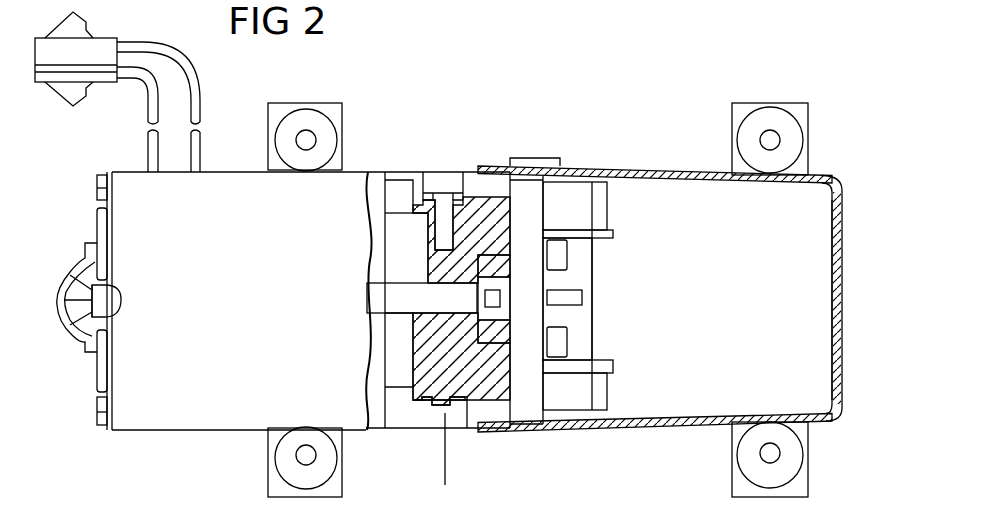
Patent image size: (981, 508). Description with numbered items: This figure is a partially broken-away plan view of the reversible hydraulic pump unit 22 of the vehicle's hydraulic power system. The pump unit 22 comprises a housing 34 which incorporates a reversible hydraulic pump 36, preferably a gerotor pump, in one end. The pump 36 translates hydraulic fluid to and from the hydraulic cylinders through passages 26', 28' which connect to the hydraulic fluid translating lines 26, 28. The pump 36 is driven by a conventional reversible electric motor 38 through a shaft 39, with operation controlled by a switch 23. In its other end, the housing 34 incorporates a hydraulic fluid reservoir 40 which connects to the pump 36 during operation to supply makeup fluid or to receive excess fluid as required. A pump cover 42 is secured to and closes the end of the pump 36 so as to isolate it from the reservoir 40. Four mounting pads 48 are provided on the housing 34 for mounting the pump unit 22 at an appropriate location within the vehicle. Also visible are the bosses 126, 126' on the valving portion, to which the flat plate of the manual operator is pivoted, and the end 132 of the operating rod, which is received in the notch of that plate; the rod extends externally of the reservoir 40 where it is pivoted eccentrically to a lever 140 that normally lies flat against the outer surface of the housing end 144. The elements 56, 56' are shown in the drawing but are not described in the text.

The reversible hydraulic pump unit 22 is at (520, 148).
The switch 23 is at (107, 37).
The hydraulic fluid translating line 26 is at (462, 162).
The passage 26' is at (467, 164).
The hydraulic fluid translating line 28 is at (438, 329).
The passage 28' is at (464, 443).
The housing 34 is at (352, 170).
The reversible hydraulic pump 36 is at (500, 232).
The reversible electric motor 38 is at (378, 205).
The shaft 39 is at (383, 297).
The hydraulic fluid reservoir 40 is at (817, 197).
The pump cover 42 is at (586, 174).
The mounting pad 48 is at (290, 108).
The support block 56 is at (606, 295).
The support block 56' is at (584, 423).
The boss 126 is at (627, 225).
The boss 126' is at (632, 306).
The end of operating rod 132 is at (572, 507).
The lever 140 is at (696, 504).
The housing end 144 is at (833, 273).